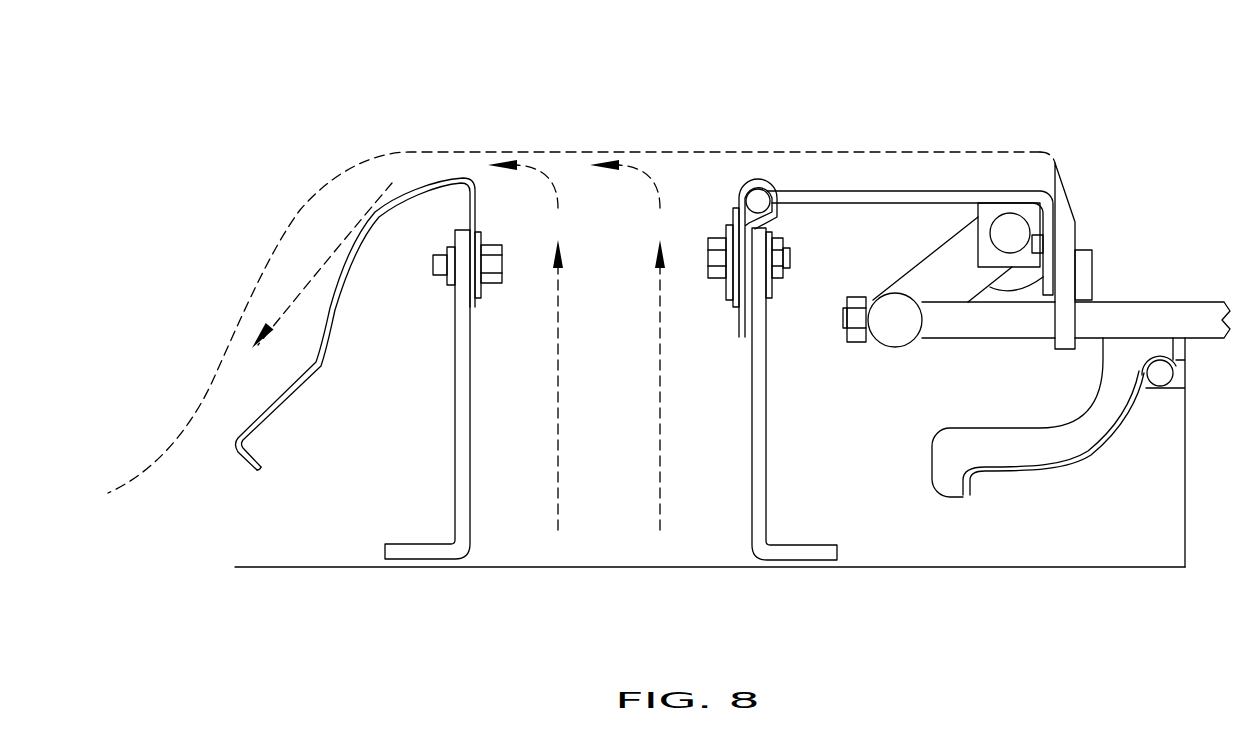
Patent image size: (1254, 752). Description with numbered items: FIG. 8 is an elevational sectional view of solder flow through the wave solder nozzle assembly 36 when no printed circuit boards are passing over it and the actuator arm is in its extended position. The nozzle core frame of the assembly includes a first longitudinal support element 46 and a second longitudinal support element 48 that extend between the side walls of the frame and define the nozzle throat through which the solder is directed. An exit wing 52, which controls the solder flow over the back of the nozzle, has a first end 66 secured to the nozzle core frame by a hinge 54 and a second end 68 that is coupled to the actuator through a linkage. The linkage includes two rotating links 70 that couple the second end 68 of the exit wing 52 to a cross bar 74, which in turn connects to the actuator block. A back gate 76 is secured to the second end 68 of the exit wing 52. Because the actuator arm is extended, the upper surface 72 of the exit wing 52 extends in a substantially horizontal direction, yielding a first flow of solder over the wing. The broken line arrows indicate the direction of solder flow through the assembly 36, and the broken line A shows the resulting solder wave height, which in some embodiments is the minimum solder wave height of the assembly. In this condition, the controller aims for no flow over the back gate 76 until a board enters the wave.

The wave solder nozzle assembly 36 is at (418, 141).
The solder wave height A is at (547, 152).
The first longitudinal support element 46 is at (413, 561).
The second longitudinal support element 48 is at (797, 561).
The hinge 54 is at (746, 193).
The first end 66 is at (771, 190).
The upper surface 72 is at (843, 191).
The exit wing 52 is at (882, 203).
The rotating links 70 is at (945, 260).
The second end 68 is at (1057, 163).
The back gate 76 is at (1068, 220).
The cross bar 74 is at (893, 337).